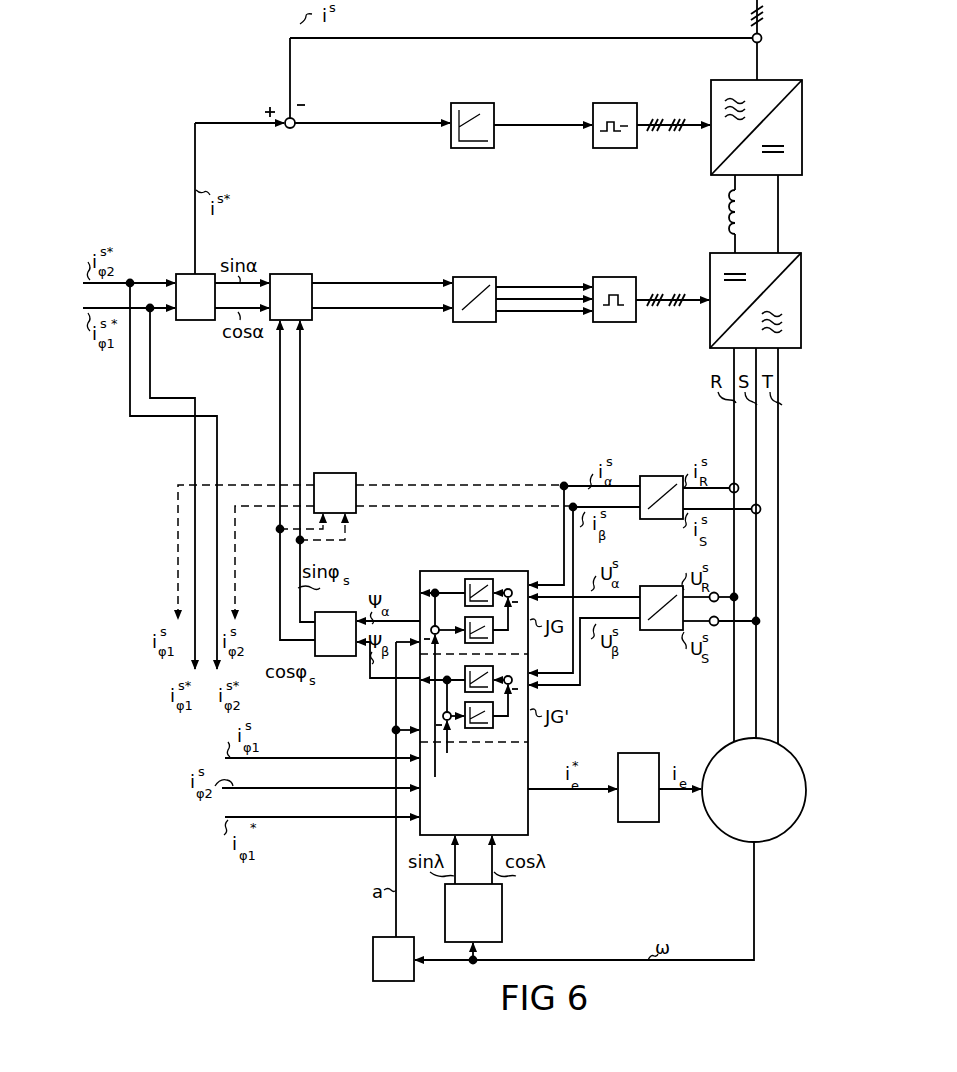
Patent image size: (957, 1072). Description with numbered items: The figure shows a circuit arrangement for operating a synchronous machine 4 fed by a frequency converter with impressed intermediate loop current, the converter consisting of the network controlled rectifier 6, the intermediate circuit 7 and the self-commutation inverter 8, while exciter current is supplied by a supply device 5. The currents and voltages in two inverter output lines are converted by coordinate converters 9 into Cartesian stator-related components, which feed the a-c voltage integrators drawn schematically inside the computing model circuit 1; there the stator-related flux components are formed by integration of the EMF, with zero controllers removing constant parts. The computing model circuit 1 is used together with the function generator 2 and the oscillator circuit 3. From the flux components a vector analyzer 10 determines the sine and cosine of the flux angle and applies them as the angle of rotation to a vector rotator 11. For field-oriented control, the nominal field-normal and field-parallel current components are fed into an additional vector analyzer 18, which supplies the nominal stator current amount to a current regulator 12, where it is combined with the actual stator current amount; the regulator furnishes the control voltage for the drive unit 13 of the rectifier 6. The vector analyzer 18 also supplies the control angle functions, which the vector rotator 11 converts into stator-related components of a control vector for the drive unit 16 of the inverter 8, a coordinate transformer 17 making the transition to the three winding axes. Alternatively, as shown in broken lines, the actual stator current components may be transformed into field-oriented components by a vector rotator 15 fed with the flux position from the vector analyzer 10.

The computing model circuit 1 is at (529, 820).
The function generator 2 is at (400, 982).
The oscillator circuit 3 is at (503, 913).
The synchronous machine 4 is at (725, 835).
The supply device 5 is at (630, 752).
The network controlled rectifier 6 is at (803, 136).
The intermediate circuit 7 is at (779, 215).
The self-commutation inverter 8 is at (802, 307).
The coordinate converters 9 is at (662, 520).
The vector analyzer 10 is at (331, 657).
The vector rotator 11 is at (285, 273).
The current regulator 12 is at (462, 102).
The drive unit 13 is at (601, 102).
The vector rotator 15 is at (330, 472).
The drive unit 16 is at (604, 276).
The coordinate transformer 17 is at (458, 276).
The vector analyzer 18 is at (198, 321).